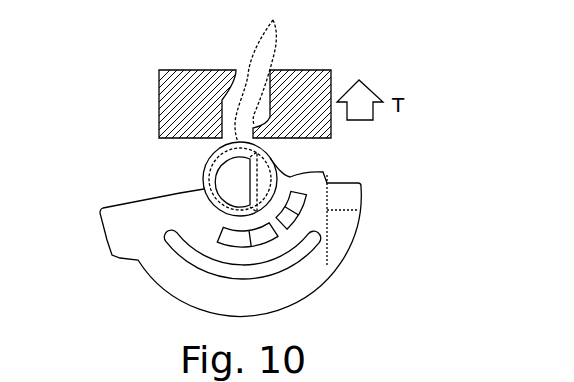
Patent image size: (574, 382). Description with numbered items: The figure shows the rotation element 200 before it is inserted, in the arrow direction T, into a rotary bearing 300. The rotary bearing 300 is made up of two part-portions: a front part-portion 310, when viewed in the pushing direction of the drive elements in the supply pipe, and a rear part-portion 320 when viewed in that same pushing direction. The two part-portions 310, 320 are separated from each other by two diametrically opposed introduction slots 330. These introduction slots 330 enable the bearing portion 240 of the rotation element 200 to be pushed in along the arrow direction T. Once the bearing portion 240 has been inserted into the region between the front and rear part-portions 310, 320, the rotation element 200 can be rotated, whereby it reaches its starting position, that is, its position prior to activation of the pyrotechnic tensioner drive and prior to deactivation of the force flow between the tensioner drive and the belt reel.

The rotation element 200 is at (297, 282).
The bearing portion 240 is at (221, 196).
The rotary bearing 300 is at (243, 91).
The front part-portion 310 is at (158, 92).
The rear part-portion 320 is at (332, 130).
The introduction slots 330 is at (265, 71).